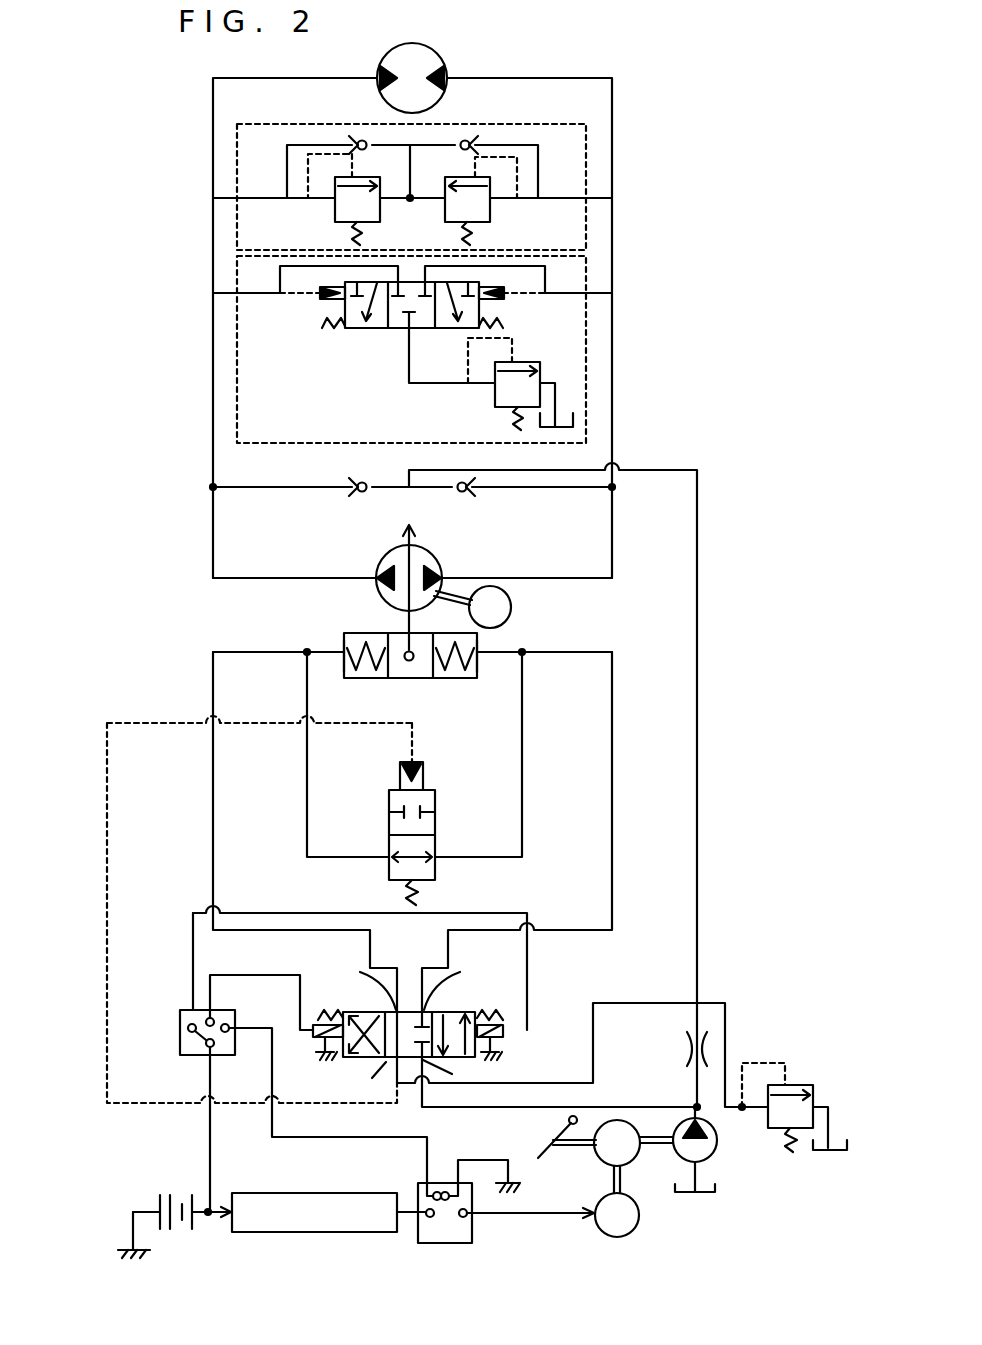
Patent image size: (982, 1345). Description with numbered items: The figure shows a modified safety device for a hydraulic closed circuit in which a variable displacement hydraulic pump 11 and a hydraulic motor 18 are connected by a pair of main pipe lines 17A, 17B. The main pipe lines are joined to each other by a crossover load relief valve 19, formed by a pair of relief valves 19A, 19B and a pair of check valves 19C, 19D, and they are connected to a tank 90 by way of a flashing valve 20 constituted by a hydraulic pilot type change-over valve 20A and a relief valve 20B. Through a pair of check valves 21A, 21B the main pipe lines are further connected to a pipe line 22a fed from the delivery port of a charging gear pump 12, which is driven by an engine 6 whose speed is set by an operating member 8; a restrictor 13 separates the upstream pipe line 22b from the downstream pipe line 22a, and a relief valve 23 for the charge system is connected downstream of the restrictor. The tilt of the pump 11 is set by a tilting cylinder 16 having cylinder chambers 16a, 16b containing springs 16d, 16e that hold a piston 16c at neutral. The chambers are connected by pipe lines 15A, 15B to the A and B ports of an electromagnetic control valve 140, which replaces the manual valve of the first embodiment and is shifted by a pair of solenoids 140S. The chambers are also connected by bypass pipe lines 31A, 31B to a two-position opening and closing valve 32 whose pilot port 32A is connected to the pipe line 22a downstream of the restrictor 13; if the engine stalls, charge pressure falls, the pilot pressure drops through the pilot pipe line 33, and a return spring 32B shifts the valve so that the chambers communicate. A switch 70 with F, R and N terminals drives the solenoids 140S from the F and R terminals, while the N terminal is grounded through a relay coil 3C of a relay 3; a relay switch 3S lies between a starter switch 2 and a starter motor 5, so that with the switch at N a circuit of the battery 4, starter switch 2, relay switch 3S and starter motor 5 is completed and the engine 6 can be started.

The hydraulic motor 18 is at (441, 52).
The main pipe line 17A is at (612, 115).
The main pipe line 17B is at (213, 238).
The crossover load relief valve 19 is at (586, 163).
The relief valve 19A is at (490, 215).
The relief valve 19B is at (335, 221).
The check valve 19C is at (471, 140).
The check valve 19D is at (356, 140).
The flashing valve 20 is at (586, 270).
The change-over valve 20A is at (398, 330).
The relief valve 20B is at (495, 405).
The tank 90 is at (562, 410).
The check valve 21A is at (470, 495).
The check valve 21B is at (355, 493).
The variable displacement hydraulic pump 11 is at (378, 565).
The engine 6 is at (512, 598).
The tilting cylinder 16 is at (334, 634).
The cylinder chamber 16a is at (455, 679).
The cylinder chamber 16b is at (358, 679).
The piston 16c is at (409, 679).
The spring 16d is at (477, 648).
The spring 16e is at (344, 648).
The bypass pipe line 31A is at (522, 722).
The bypass pipe line 31B is at (306, 729).
The opening and closing valve 32 is at (434, 853).
The pilot port 32A is at (425, 766).
The return spring 32B is at (412, 900).
The pipe line 22a is at (697, 760).
The pipe line 15A is at (612, 870).
The pipe line 15B is at (210, 860).
The pilot pipe line 33 is at (107, 895).
The electromagnetic control valve 140 is at (540, 983).
The solenoid 140S is at (318, 1046).
The switch 70 is at (180, 1040).
The restrictor 13 is at (582, 1056).
The relief valve 23 is at (798, 1085).
The pipe line 22b is at (708, 1120).
The charging gear pump 12 is at (714, 1164).
The battery 4 is at (163, 1190).
The relay coil 3C is at (445, 1183).
The operating member 8 is at (556, 1134).
The starter switch 2 is at (305, 1232).
The relay switch 3S is at (420, 1240).
The relay 3 is at (462, 1243).
The starter motor 5 is at (640, 1218).